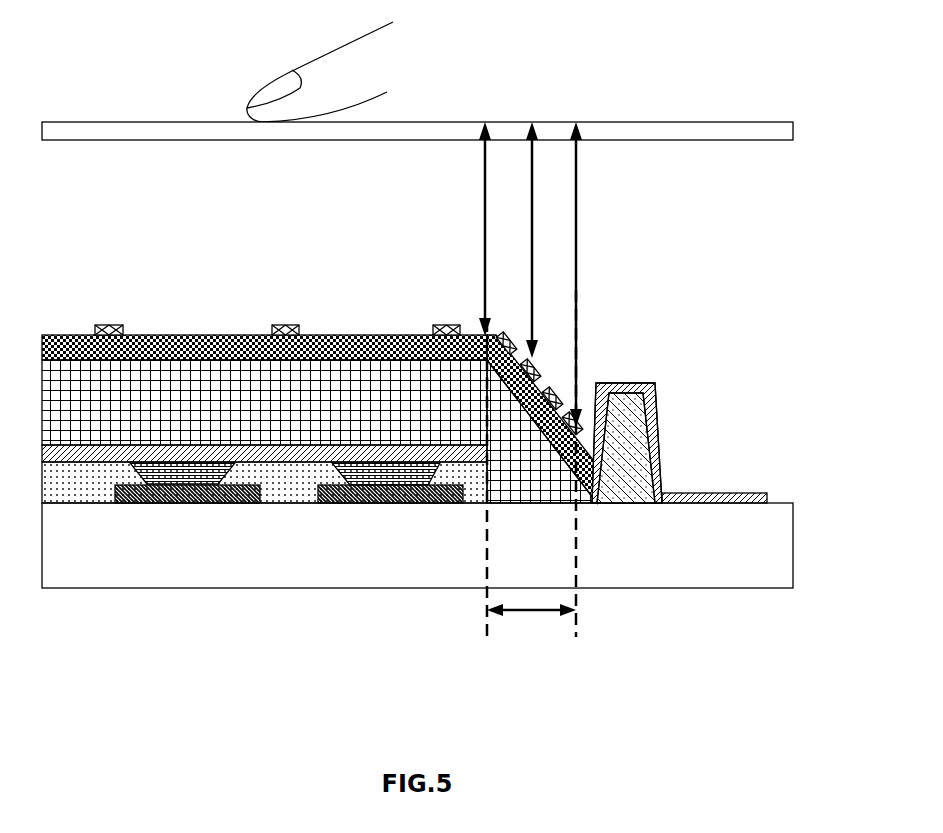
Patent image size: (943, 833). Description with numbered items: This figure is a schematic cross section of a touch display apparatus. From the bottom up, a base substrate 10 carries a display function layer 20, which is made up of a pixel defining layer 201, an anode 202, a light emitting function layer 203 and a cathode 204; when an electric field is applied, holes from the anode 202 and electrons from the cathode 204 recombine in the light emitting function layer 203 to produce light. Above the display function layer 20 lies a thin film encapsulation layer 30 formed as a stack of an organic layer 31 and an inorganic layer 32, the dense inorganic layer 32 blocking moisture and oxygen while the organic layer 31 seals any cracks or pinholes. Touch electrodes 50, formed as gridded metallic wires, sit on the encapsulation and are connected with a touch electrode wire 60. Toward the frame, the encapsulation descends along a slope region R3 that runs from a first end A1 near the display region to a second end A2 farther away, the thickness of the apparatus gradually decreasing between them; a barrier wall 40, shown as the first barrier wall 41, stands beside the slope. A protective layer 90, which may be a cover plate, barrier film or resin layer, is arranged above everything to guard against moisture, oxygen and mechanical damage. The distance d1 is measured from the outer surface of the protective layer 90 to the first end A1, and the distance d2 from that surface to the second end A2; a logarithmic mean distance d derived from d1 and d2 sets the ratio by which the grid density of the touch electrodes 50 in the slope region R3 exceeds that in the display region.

The base substrate 10 is at (142, 548).
The display function layer 20 is at (264, 578).
The pixel defining layer 201 is at (290, 490).
The anode 202 is at (347, 497).
The light emitting function layer 203 is at (403, 470).
The cathode 204 is at (462, 455).
The thin film encapsulation layer 30 is at (319, 340).
The organic layer 31 is at (153, 370).
The inorganic layer 32 is at (218, 345).
The barrier wall 40 is at (631, 526).
The first barrier wall 41 is at (632, 483).
The touch electrode 50 is at (288, 327).
The touch electrode wire 60 is at (713, 498).
The protective layer 90 is at (650, 130).
The first end A1 is at (482, 328).
The second end A2 is at (585, 430).
The distance d is at (539, 240).
The first distance d1 is at (497, 229).
The second distance d2 is at (588, 274).
The slope region R3 is at (531, 628).